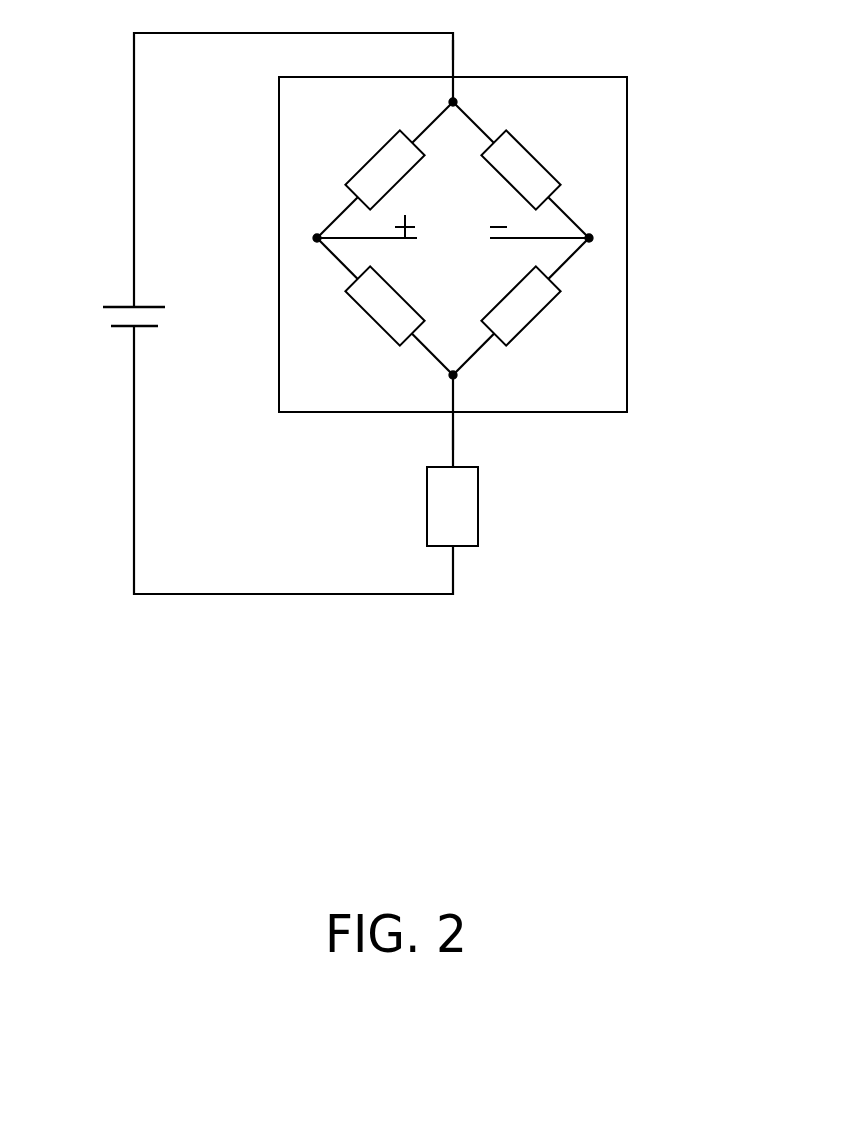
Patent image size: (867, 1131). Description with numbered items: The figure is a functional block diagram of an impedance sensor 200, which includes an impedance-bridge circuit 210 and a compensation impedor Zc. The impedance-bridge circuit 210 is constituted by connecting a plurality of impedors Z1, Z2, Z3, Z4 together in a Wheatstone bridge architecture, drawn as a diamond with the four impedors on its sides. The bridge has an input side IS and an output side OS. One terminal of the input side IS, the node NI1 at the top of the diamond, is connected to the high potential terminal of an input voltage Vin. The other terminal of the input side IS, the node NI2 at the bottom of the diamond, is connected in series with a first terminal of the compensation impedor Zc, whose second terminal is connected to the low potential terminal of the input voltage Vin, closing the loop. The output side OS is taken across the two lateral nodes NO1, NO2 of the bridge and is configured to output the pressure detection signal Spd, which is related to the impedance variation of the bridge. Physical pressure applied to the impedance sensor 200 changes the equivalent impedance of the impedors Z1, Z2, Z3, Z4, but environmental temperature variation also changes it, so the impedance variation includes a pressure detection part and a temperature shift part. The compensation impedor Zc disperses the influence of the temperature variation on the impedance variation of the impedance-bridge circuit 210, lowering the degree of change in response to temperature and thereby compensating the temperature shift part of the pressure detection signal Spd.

The impedance sensor 200 is at (720, 703).
The impedance-bridge circuit 210 is at (627, 165).
The input voltage Vin is at (111, 315).
The input side IS is at (453, 53).
The compensation impedor Zc is at (452, 506).
The impedor Z1 is at (384, 169).
The impedor Z2 is at (520, 169).
The impedor Z3 is at (384, 305).
The impedor Z4 is at (520, 305).
The node NI1 is at (456, 101).
The node NI2 is at (456, 376).
The first output node NO1 is at (317, 242).
The second output node NO2 is at (588, 243).
The output side OS is at (532, 237).
The pressure detection signal Spd is at (451, 243).